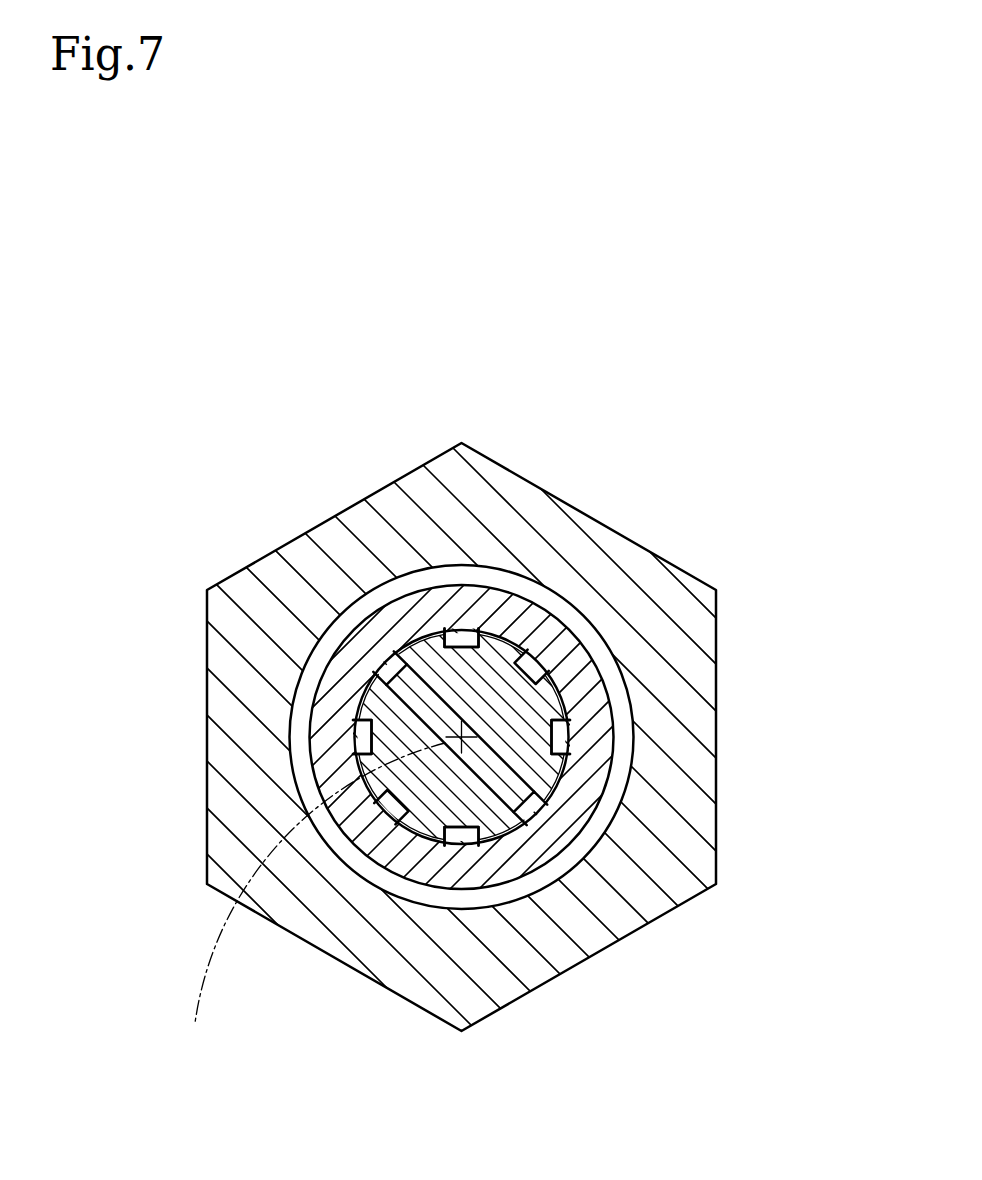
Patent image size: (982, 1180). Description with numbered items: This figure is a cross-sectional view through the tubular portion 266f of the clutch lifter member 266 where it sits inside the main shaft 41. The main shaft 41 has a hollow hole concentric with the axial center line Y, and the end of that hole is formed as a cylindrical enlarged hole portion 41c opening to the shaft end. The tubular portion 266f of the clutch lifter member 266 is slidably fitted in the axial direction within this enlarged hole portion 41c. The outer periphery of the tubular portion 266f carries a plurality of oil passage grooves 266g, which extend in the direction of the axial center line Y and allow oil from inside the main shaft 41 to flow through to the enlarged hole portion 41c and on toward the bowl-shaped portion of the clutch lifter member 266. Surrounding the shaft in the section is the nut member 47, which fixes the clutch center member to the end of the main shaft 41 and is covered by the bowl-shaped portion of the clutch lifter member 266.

The nut member 47 is at (715, 678).
The main shaft 41 is at (612, 746).
The enlarged hole portion 41c is at (532, 807).
The tubular portion 266f is at (510, 837).
The clutch lifter member 266 is at (562, 762).
The oil passage grooves 266g is at (567, 722).
The axial center line Y is at (314, 901).